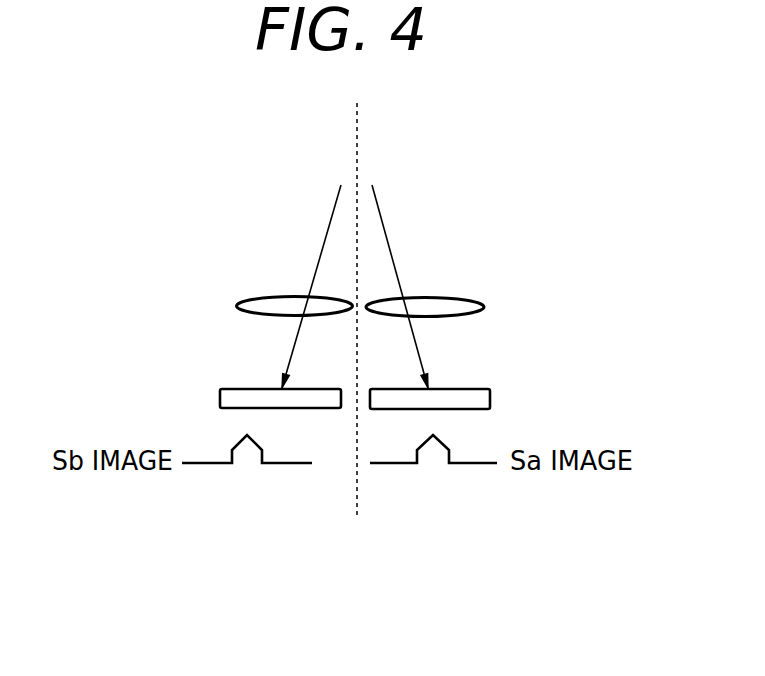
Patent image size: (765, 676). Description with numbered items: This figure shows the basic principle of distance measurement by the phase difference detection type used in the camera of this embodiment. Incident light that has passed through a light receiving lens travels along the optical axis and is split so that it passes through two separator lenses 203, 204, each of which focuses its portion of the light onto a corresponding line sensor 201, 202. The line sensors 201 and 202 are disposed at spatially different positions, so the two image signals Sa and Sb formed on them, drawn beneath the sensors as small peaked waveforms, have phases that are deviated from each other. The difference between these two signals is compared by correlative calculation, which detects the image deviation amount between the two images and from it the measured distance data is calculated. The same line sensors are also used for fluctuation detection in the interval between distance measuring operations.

The line sensor 201 is at (482, 389).
The line sensor 202 is at (228, 389).
The separator lens 203 is at (468, 302).
The separator lens 204 is at (252, 298).